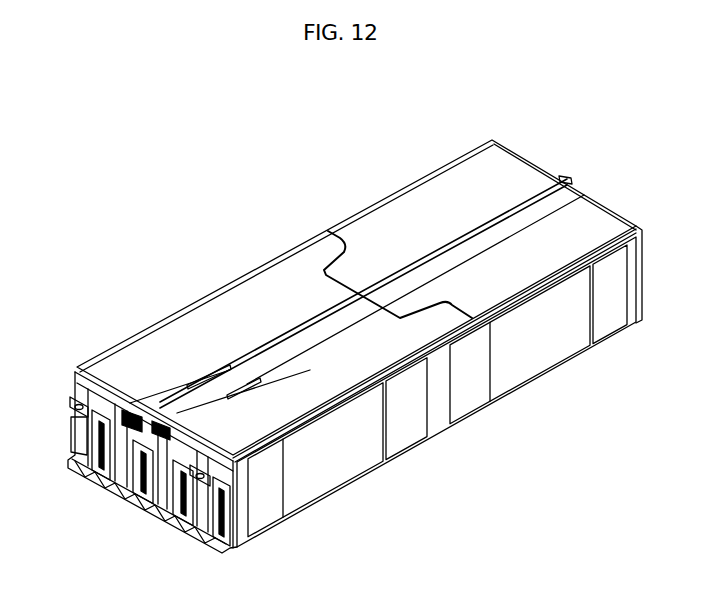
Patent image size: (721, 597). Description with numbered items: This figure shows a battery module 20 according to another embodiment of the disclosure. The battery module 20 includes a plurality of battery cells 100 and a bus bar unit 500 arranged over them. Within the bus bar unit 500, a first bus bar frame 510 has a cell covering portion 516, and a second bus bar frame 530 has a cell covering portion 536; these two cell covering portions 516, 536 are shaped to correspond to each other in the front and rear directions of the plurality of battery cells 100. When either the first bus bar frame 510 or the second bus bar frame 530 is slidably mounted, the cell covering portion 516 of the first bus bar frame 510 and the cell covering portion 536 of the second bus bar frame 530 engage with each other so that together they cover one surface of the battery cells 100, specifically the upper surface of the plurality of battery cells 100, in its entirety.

The battery module 20 is at (230, 184).
The battery cells 100 is at (456, 444).
The bus bar unit 500 is at (610, 181).
The first bus bar frame 510 is at (60, 378).
The cell covering portion 516 is at (205, 320).
The second bus bar frame 530 is at (493, 120).
The cell covering portion 536 is at (402, 208).